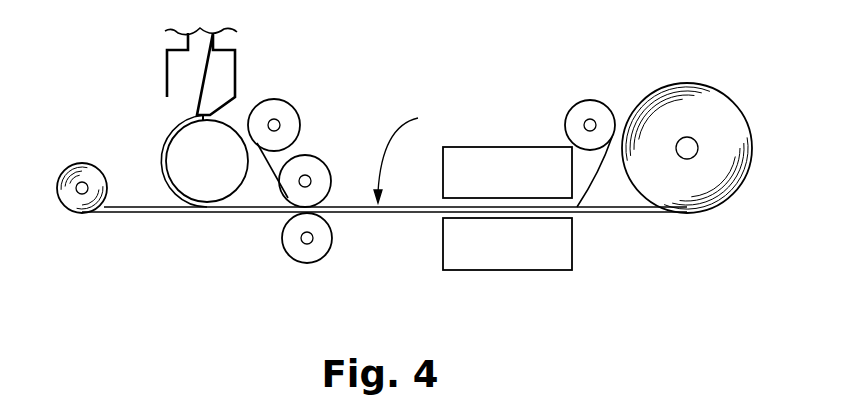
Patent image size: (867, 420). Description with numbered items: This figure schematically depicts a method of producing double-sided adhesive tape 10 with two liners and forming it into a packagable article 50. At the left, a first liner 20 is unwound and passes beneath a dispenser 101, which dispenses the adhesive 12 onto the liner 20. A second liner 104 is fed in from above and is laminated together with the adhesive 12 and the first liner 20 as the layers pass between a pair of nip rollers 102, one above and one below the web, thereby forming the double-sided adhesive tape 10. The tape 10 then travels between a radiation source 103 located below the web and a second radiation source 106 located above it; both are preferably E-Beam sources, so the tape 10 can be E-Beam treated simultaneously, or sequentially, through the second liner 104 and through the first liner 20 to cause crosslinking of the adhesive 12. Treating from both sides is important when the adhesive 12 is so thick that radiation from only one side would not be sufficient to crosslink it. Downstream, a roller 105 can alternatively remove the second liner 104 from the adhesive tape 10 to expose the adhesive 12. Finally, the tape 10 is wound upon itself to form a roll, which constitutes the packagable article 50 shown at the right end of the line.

The double-sided adhesive tape 10 is at (409, 154).
The adhesive 12 is at (166, 138).
The liner 20 is at (135, 213).
The packagable article 50 is at (724, 102).
The dispenser 101 is at (167, 71).
The nip rollers 102 is at (316, 158).
The radiation source 103 is at (515, 260).
The second liner 104 is at (283, 102).
The roller 105 is at (600, 102).
The second radiation source 106 is at (492, 157).